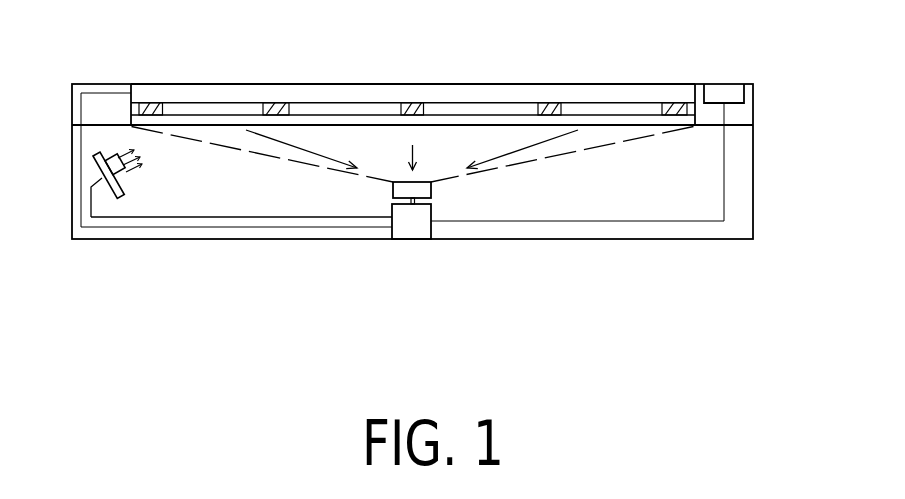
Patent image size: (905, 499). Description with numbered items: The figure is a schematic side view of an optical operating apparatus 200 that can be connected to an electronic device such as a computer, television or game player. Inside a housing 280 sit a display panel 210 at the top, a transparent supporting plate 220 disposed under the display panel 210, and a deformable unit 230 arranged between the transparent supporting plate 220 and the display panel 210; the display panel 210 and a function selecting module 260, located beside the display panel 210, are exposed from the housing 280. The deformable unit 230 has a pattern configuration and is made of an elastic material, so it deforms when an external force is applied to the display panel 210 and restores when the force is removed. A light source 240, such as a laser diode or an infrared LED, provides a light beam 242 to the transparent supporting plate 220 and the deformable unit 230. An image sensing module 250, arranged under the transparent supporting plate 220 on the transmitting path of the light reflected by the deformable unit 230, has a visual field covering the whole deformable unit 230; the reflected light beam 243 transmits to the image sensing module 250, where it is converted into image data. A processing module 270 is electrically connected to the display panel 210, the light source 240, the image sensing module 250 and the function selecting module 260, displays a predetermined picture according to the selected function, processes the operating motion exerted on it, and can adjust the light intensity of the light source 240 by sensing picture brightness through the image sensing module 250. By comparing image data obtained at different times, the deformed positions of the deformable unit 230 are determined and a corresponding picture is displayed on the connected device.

The optical operating apparatus 200 is at (677, 304).
The display panel 210 is at (636, 91).
The transparent supporting plate 220 is at (509, 122).
The deformable unit 230 is at (283, 102).
The light source 240 is at (98, 155).
The light beam 242 is at (125, 152).
The light beam 243 is at (493, 160).
The image sensing module 250 is at (393, 190).
The function selecting module 260 is at (732, 90).
The processing module 270 is at (428, 229).
The housing 280 is at (753, 205).